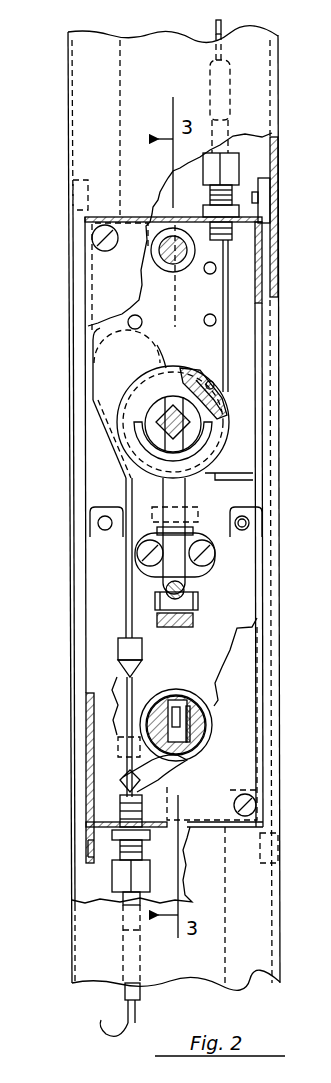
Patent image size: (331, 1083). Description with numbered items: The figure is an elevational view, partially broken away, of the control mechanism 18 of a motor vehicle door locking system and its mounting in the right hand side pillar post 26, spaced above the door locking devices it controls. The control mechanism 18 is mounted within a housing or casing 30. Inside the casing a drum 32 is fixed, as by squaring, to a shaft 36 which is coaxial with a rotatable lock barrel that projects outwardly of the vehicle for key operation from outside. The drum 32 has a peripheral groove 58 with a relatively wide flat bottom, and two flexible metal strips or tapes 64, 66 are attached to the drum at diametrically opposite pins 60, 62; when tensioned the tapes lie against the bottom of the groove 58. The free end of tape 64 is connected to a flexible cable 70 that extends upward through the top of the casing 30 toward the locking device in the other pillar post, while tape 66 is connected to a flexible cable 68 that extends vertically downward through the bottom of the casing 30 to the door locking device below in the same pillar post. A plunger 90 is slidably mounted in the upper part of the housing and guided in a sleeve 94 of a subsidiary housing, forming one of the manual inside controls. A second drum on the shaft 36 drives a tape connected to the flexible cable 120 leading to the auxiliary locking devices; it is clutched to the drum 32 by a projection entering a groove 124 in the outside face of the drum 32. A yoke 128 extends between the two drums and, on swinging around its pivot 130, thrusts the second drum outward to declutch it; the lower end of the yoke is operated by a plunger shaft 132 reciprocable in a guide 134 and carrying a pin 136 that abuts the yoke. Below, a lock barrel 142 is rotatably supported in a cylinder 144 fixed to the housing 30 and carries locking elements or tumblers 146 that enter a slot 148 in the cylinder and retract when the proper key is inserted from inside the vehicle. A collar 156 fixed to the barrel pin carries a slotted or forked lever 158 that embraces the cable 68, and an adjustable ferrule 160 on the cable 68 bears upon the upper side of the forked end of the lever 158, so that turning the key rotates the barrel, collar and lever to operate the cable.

The control mechanism 18 is at (170, 26).
The right hand side pillar post 26 is at (68, 103).
The housing or casing 30 is at (86, 722).
The drum 32 is at (168, 364).
The shaft 36 is at (165, 425).
The peripheral groove 58 is at (220, 397).
The pin 60 is at (213, 387).
The flexible metal strip or tape 64 is at (227, 365).
The pin 62 is at (157, 536).
The flexible metal strip or tape 66 is at (93, 403).
The flexible cable 68 is at (127, 618).
The flexible cable 70 is at (222, 32).
The plunger 90 is at (160, 254).
The sleeve 94 is at (155, 218).
The flexible cable 120 is at (138, 1011).
The groove 124 is at (187, 441).
The yoke 128 is at (203, 492).
The pivot 130 is at (200, 516).
The plunger shaft 132 is at (187, 586).
The guide 134 is at (193, 618).
The pin 136 is at (198, 599).
The lock barrel 142 is at (190, 712).
The cylinder 144 is at (208, 747).
The locking elements or tumblers 146 is at (195, 690).
The slot 148 is at (180, 774).
The collar 156 is at (183, 694).
The slotted or forked lever 158 is at (173, 794).
The adjustable ferrule 160 is at (118, 651).